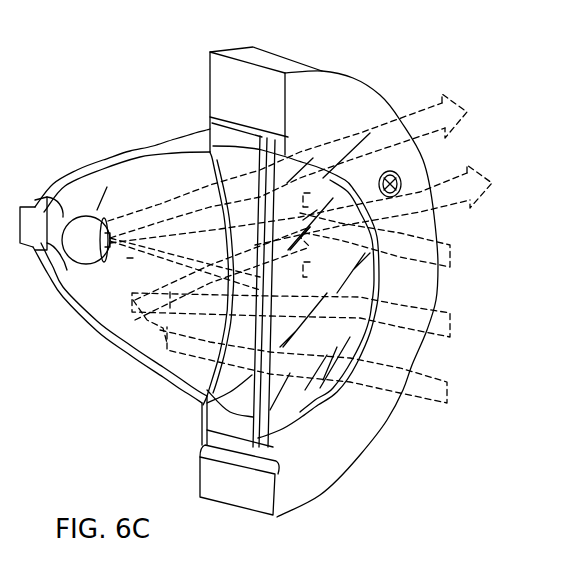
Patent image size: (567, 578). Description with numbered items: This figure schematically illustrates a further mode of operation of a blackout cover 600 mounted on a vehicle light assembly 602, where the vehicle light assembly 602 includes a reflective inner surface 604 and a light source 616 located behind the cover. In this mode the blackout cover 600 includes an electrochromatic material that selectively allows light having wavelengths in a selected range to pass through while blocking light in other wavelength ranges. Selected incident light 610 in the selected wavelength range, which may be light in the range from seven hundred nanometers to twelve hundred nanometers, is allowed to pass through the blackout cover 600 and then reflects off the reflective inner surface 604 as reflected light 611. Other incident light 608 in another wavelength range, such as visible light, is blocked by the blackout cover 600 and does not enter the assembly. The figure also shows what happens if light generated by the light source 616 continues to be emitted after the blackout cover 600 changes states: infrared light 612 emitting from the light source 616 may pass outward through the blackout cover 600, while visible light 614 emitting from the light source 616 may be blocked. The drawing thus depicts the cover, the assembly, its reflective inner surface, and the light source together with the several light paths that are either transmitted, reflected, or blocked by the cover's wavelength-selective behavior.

The blackout cover 600 is at (372, 127).
The vehicle light assembly 602 is at (141, 148).
The reflective inner surface 604 is at (97, 210).
The other incident light 608 is at (450, 256).
The selected incident light 610 is at (450, 392).
The reflected light 611 is at (482, 177).
The infrared light 612 is at (452, 100).
The visible light 614 is at (127, 260).
The light source 616 is at (83, 260).